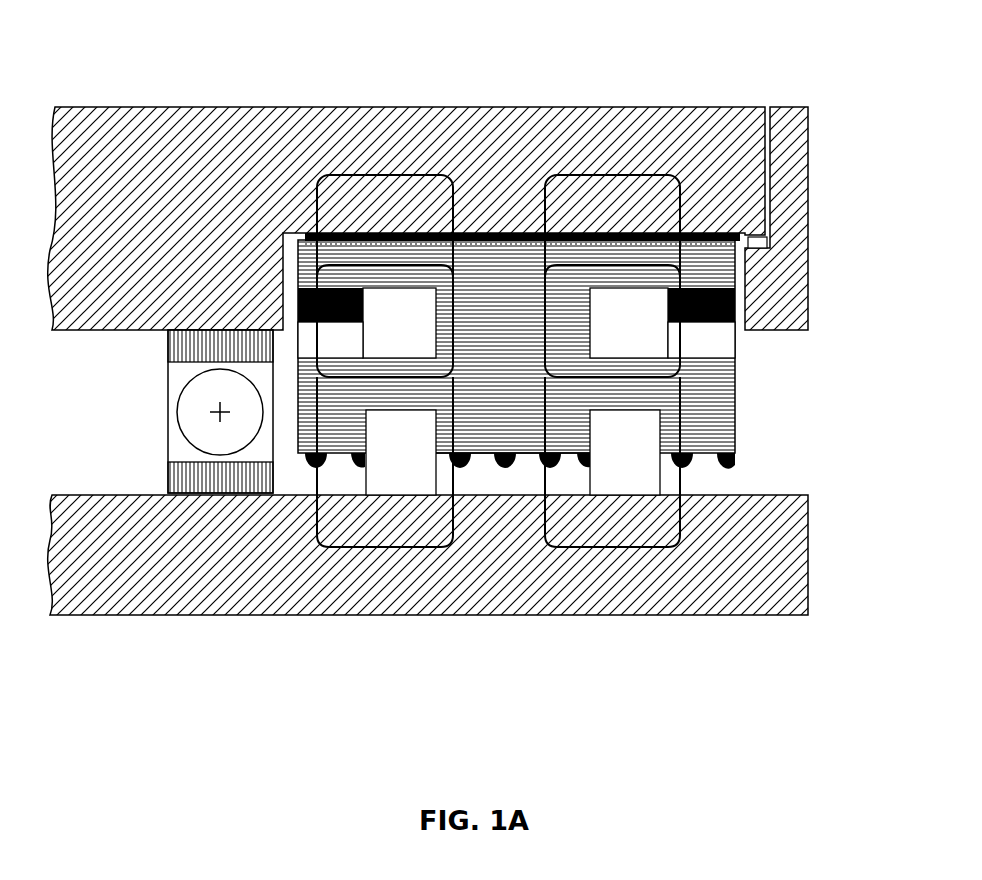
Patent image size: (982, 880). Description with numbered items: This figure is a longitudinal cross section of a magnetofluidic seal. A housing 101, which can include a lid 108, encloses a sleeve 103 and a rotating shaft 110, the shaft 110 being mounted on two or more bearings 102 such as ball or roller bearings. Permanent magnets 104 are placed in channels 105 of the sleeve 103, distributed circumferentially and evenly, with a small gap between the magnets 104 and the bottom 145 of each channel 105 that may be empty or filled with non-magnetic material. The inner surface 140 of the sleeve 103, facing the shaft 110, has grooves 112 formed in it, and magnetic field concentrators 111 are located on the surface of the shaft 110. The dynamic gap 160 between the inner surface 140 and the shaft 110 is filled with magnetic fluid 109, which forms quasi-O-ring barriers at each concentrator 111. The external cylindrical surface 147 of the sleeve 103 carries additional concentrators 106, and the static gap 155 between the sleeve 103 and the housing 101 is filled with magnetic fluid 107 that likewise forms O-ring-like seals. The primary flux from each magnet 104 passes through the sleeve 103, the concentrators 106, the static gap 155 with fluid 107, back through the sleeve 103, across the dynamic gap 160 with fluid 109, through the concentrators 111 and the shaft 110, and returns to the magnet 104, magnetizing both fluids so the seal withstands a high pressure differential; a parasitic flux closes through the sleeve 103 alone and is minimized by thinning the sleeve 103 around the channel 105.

The housing 101 is at (135, 215).
The bearings 102 is at (185, 345).
The sleeve 103 is at (313, 268).
The permanent magnets 104 is at (350, 288).
The channels 105 is at (405, 313).
The additional concentrators 106 is at (458, 237).
The magnetic fluid 107 is at (511, 237).
The lid 108 is at (785, 182).
The magnetic fluid 109 is at (748, 450).
The rotating shaft 110 is at (770, 537).
The magnetic field concentrators 111 is at (575, 485).
The grooves 112 is at (407, 428).
The inner surface 140 is at (428, 467).
The bottom 145 is at (416, 341).
The external cylindrical surface 147 is at (515, 257).
The static gap 155 is at (745, 241).
The dynamic gap 160 is at (286, 469).